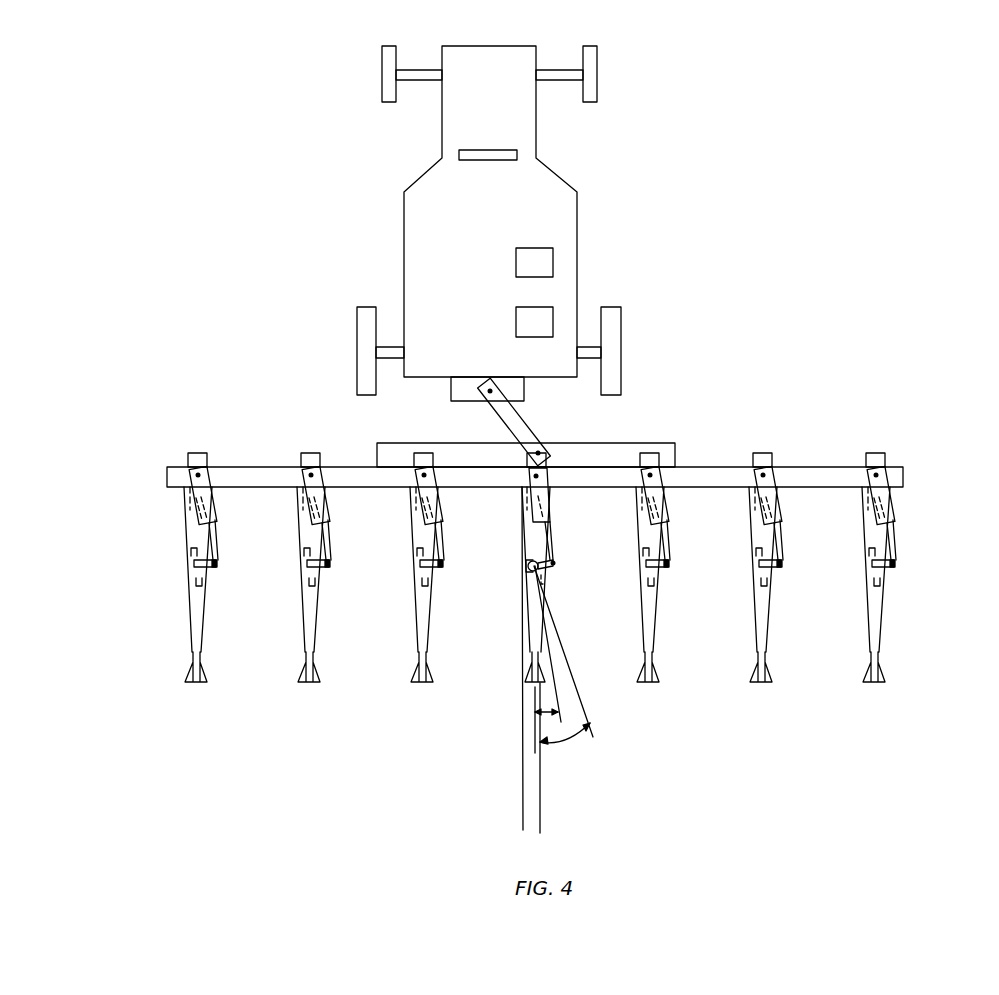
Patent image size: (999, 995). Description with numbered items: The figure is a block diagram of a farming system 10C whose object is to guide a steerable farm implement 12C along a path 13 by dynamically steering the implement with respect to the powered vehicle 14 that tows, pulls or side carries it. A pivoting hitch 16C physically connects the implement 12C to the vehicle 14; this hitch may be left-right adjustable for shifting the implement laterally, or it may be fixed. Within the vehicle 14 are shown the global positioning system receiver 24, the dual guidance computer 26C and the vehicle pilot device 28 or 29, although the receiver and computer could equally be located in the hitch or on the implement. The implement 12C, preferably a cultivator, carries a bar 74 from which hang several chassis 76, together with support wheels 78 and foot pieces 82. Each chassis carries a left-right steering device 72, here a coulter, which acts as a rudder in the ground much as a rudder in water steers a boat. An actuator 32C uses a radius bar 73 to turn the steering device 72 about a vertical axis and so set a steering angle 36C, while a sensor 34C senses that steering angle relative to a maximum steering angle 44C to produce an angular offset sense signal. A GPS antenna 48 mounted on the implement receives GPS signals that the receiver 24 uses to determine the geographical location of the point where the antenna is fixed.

The farming system 10C is at (822, 223).
The steerable farm implement 12C is at (568, 459).
The path 13 is at (528, 778).
The powered vehicle 14 is at (430, 170).
The pivoting hitch 16C is at (388, 442).
The global positioning system (GPS) receiver 24 is at (513, 313).
The dual guidance computer 26C is at (513, 252).
The vehicle pilot device 28 is at (487, 135).
The vehicle pilot device 29 is at (492, 150).
The actuator 32C is at (551, 510).
The sensor 34C is at (527, 565).
The steering angle 36C is at (535, 708).
The maximum steering angle 44C is at (560, 738).
The GPS antenna 48 is at (527, 568).
The left-right steering device 72 is at (530, 560).
The radius bar 73 is at (548, 566).
The bar 74 is at (247, 467).
The chassis 76 is at (524, 600).
The support wheel 78 is at (197, 452).
The foot piece 82 is at (530, 676).